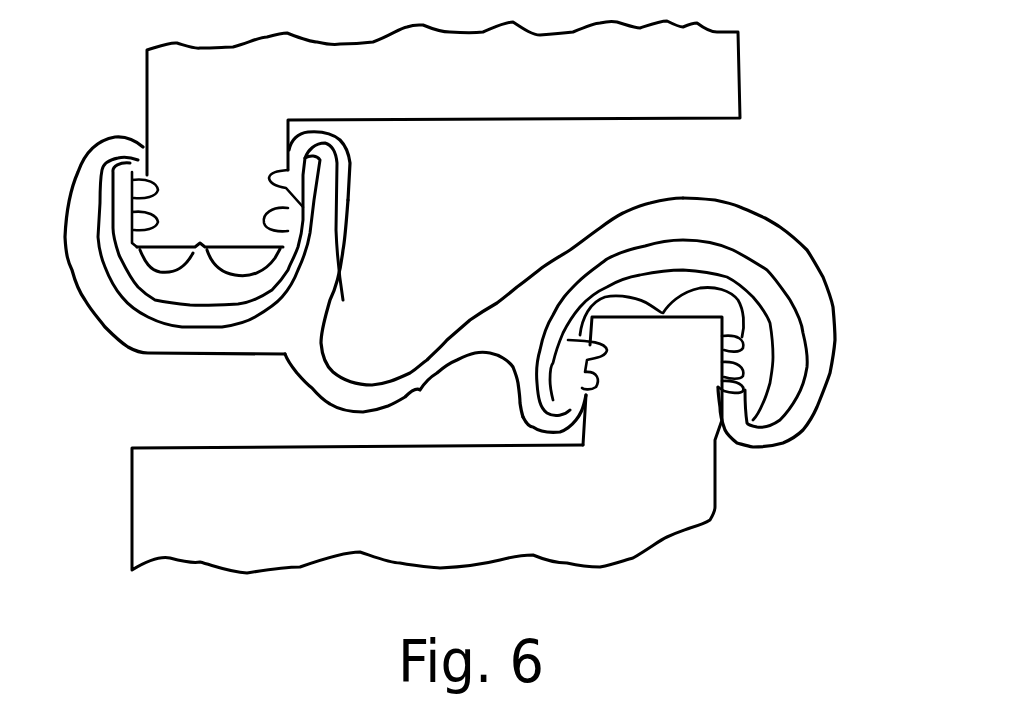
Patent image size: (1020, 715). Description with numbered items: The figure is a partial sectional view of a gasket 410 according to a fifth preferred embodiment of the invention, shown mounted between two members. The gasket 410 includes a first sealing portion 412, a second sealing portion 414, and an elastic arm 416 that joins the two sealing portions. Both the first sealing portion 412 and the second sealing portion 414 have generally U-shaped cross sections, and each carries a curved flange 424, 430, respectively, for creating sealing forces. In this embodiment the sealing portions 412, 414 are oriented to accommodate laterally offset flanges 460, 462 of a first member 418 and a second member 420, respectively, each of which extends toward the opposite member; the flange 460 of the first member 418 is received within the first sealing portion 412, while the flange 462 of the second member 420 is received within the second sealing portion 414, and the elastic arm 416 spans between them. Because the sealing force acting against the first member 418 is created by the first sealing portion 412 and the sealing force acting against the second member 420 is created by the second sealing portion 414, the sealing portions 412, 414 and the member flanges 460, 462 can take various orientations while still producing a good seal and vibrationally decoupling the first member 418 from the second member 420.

The gasket 410 is at (455, 284).
The first sealing portion 412 is at (235, 277).
The second sealing portion 414 is at (648, 313).
The elastic arm 416 is at (380, 384).
The first member 418 is at (234, 47).
The second member 420 is at (717, 483).
The curved flange 424 is at (198, 318).
The curved flange 430 is at (643, 250).
The flange 460 is at (345, 131).
The flange 462 is at (580, 428).